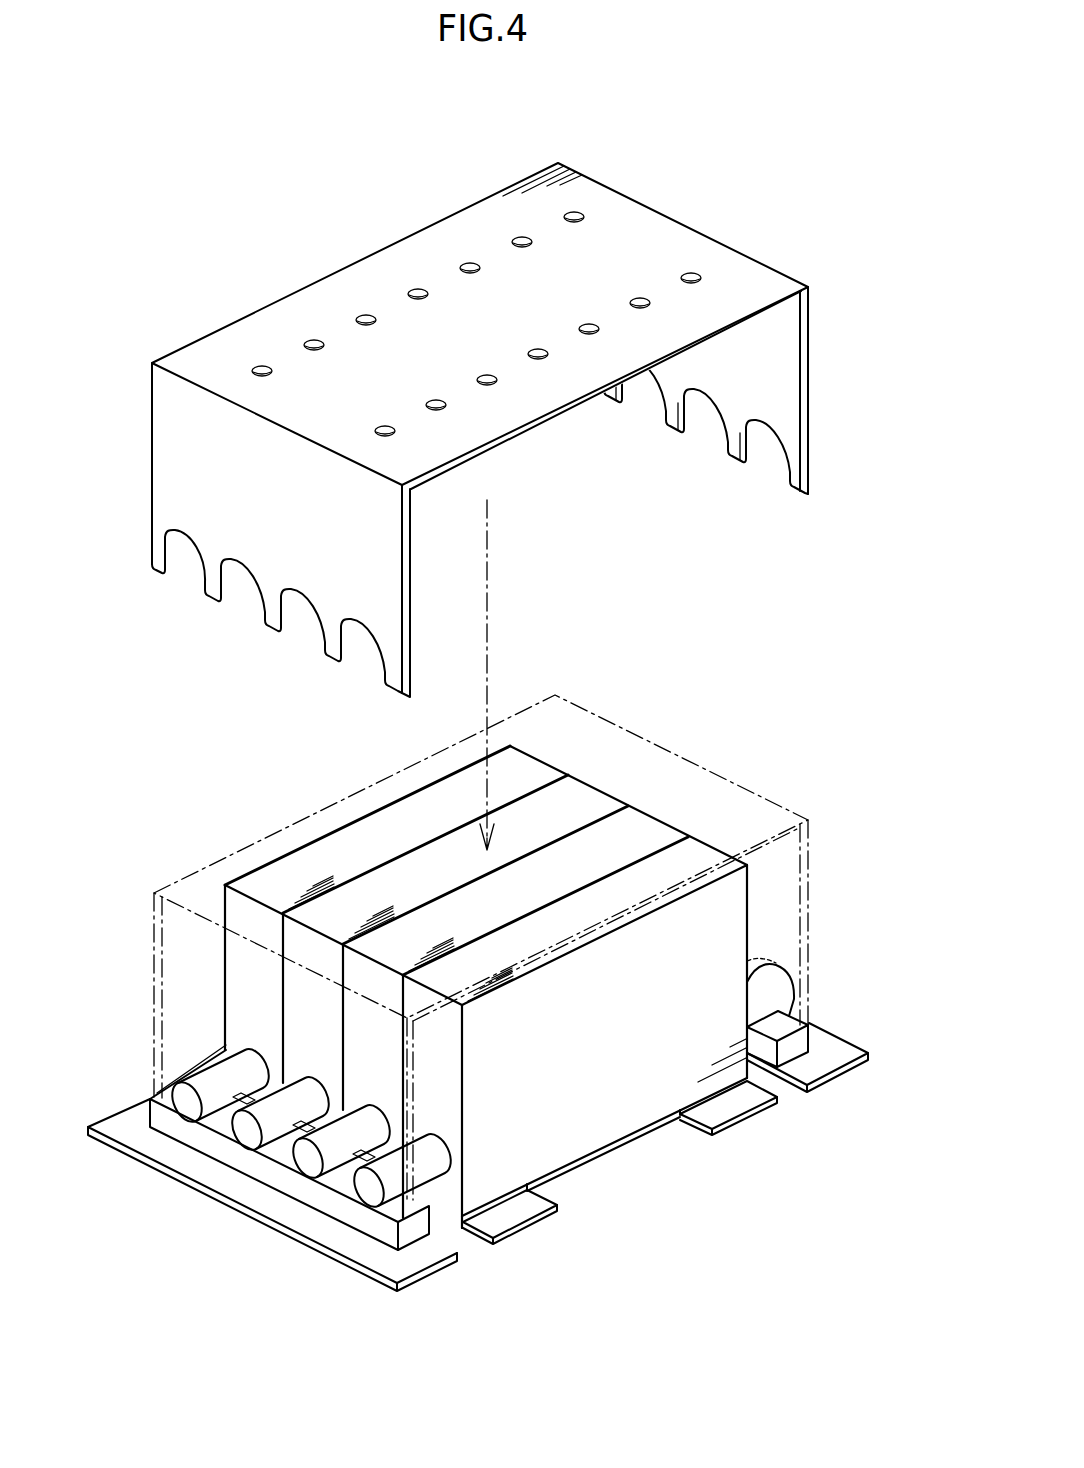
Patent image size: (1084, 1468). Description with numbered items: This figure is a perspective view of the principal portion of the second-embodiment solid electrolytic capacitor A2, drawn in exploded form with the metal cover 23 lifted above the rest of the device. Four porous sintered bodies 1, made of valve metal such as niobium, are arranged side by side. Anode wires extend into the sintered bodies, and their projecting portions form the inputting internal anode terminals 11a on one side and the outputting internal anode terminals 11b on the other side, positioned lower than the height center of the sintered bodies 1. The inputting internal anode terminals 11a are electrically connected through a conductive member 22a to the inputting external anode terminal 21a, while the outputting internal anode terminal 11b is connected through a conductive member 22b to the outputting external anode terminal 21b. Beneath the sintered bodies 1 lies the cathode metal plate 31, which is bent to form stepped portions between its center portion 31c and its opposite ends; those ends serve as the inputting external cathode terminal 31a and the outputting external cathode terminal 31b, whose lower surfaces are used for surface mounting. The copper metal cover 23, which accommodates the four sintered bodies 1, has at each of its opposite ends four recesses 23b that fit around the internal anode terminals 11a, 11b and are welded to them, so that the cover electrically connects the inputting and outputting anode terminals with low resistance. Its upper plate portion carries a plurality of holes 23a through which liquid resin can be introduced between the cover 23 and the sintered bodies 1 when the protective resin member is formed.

The solid electrolytic capacitor A2 is at (813, 198).
The porous sintered body 1 is at (524, 768).
The inputting internal anode terminal 11a is at (372, 1198).
The outputting internal anode terminal 11b is at (771, 989).
The inputting external anode terminal 21a is at (390, 1262).
The outputting external anode terminal 21b is at (825, 1061).
The conductive member 22a is at (372, 1222).
The conductive member 22b is at (799, 1043).
The metal cover 23 is at (657, 233).
The hole 23a is at (477, 264).
The recess 23b is at (770, 466).
The cathode metal plate 31 is at (651, 1128).
The inputting external cathode terminal 31a is at (736, 1104).
The outputting external cathode terminal 31b is at (511, 1213).
The center portion 31c is at (591, 1158).